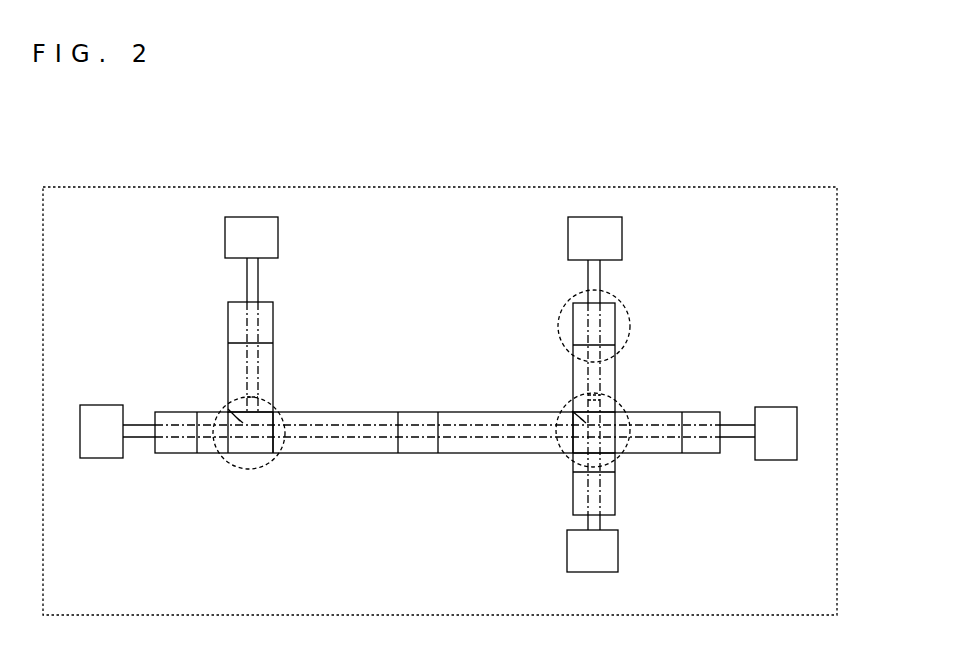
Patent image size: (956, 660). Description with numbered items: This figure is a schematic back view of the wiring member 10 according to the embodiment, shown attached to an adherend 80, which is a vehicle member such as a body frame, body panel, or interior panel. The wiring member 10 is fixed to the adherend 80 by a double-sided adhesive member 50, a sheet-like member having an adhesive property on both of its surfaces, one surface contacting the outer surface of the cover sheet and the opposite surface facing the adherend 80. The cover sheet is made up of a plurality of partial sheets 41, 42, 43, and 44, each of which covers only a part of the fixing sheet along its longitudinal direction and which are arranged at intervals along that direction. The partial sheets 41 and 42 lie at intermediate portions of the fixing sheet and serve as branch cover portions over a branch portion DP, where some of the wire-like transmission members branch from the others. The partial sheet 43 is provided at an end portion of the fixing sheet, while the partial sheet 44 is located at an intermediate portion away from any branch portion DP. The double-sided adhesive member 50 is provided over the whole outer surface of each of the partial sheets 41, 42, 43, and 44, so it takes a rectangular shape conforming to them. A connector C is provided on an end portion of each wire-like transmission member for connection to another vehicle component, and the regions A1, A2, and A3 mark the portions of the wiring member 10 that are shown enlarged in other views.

The adherend 80 is at (495, 186).
The wiring member 10 is at (142, 287).
The double-sided adhesive member 50 is at (447, 408).
The partial sheet 41 is at (610, 445).
The partial sheet 42 is at (258, 455).
The partial sheet 43 is at (271, 325).
The partial sheet 44 is at (433, 446).
The connector C is at (278, 238).
The branch portion DP is at (243, 422).
The region A1 is at (566, 460).
The region A2 is at (256, 470).
The region A3 is at (558, 326).